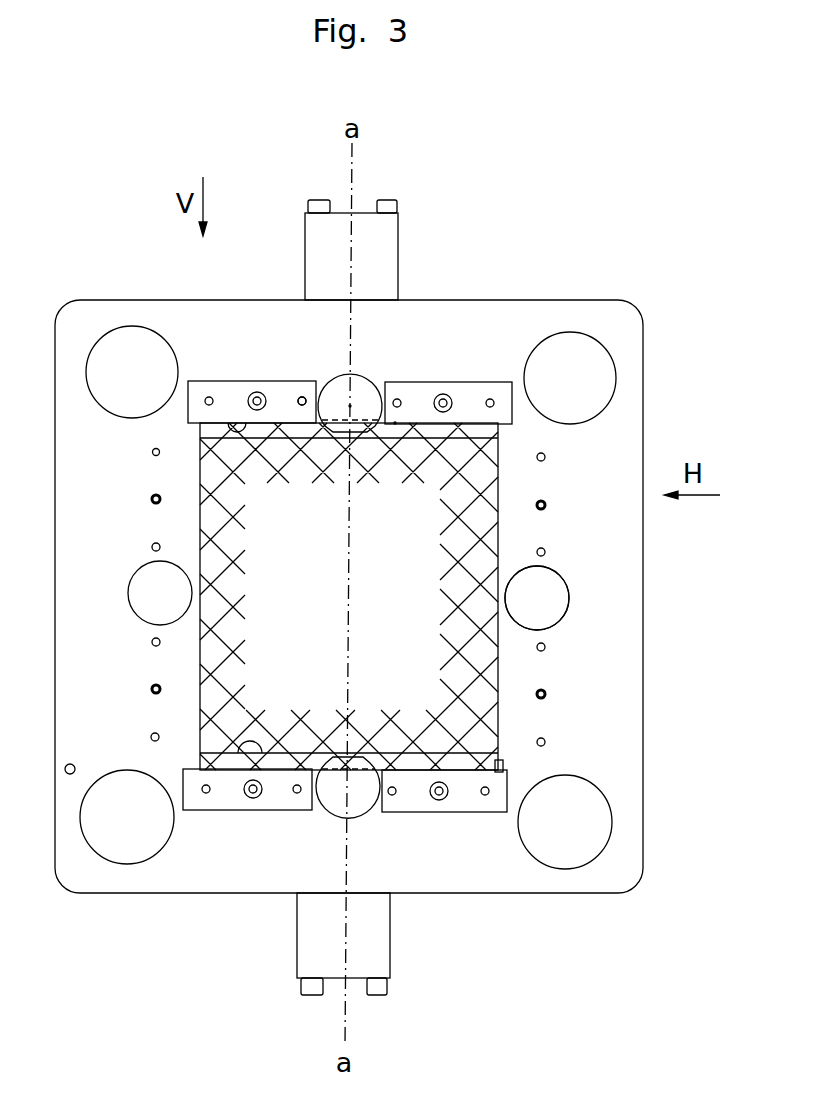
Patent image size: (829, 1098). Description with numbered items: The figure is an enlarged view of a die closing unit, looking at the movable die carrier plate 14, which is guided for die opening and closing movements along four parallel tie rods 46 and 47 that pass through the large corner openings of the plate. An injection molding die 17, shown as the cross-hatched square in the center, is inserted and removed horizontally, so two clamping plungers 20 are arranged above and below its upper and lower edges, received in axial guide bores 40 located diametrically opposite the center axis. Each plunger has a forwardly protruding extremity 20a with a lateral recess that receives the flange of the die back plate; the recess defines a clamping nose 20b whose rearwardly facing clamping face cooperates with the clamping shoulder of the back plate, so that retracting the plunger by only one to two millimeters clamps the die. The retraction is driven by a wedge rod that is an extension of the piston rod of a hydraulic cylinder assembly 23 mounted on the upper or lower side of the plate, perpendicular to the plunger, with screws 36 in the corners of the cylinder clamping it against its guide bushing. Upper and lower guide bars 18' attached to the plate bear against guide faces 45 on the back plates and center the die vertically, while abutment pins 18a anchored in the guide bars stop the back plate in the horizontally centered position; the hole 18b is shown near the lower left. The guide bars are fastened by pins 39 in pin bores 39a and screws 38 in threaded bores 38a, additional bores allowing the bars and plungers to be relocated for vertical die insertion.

The movable die carrier plate 14 is at (620, 692).
The injection molding die 17 is at (499, 668).
The guide bars 18' is at (350, 566).
The abutment pins 18a is at (505, 765).
The fastening hole 18b is at (72, 762).
The clamping plungers 20 is at (345, 373).
The protruding extremities 20a is at (360, 395).
The clamping nose 20b is at (395, 425).
The hydraulic cylinder assembly 23 is at (382, 250).
The screws 36 is at (386, 206).
The screws 38 is at (257, 392).
The threaded bores 38a is at (150, 499).
The pins 39 is at (302, 396).
The pin bores 39a is at (151, 452).
The guide bores 40 is at (543, 598).
The guide faces 45 is at (232, 423).
The tie rod 46 is at (595, 383).
The tie rod 47 is at (590, 820).